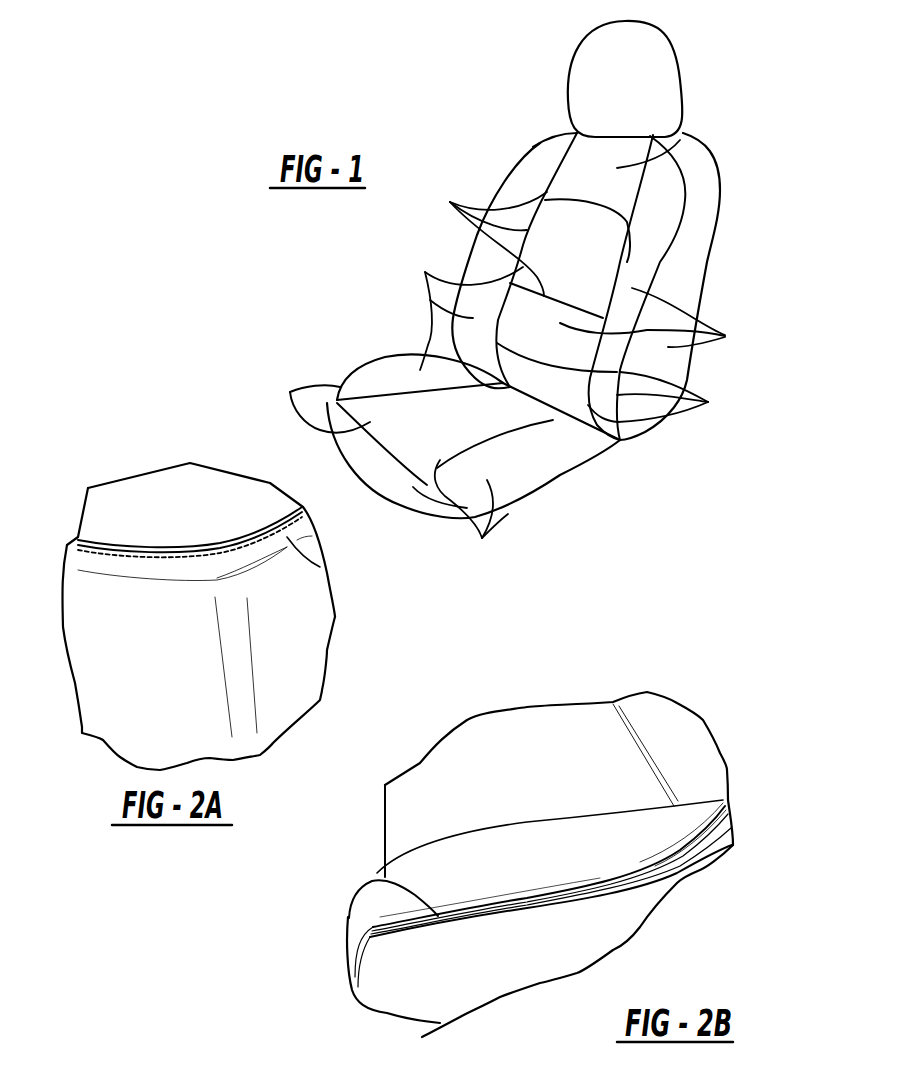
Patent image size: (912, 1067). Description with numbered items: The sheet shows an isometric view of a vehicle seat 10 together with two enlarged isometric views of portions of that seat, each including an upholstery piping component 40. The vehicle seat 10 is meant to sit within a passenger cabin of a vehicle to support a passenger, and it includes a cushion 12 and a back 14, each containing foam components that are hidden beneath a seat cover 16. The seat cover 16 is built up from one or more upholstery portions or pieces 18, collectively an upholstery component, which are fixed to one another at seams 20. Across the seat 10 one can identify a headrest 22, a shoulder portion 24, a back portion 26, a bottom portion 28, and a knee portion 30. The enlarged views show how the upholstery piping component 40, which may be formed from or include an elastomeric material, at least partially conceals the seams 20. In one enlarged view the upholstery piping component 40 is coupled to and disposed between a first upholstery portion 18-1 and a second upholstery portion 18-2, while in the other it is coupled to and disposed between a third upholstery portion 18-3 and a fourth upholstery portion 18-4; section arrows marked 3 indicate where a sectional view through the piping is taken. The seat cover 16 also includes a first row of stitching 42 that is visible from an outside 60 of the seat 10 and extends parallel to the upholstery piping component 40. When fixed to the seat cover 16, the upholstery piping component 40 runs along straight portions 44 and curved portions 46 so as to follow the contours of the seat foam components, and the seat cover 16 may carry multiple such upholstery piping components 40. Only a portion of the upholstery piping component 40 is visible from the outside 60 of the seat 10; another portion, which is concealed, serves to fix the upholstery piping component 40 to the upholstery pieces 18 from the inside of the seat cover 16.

In FIG. 1, the vehicle seat 10 is at (497, 57).
In FIG. 1, the cushion 12 is at (383, 397).
In FIG. 1, the back 14 is at (703, 165).
In FIG. 1, the seat cover 16 is at (520, 185).
In FIG. 2A, the seat cover 16 is at (115, 695).
In FIG. 2B, the seat cover 16 is at (577, 723).
In FIG. 1, the upholstery portions 18 is at (617, 168).
In FIG. 1, the seams 20 is at (587, 527).
In FIG. 1, the headrest 22 is at (653, 50).
In FIG. 1, the shoulder portion 24 is at (543, 147).
In FIG. 1, the back portion 26 is at (660, 212).
In FIG. 1, the bottom portion 28 is at (490, 421).
In FIG. 1, the knee portion 30 is at (381, 469).
In FIG. 1, the outside 60 is at (392, 281).
In FIG. 2A, the first upholstery portion 18-1 is at (158, 487).
In FIG. 2A, the second upholstery portion 18-2 is at (95, 643).
In FIG. 2B, the third upholstery portion 18-3 is at (677, 827).
In FIG. 2B, the fourth upholstery portion 18-4 is at (388, 985).
In FIG. 2A, the upholstery piping component 40 is at (108, 543).
In FIG. 2B, the upholstery piping component 40 is at (370, 880).
In FIG. 2A, the first row of stitching 42 is at (287, 537).
In FIG. 2B, the first row of stitching 42 is at (618, 902).
In FIG. 2B, the straight portions 44 is at (523, 895).
In FIG. 2A, the curved portions 46 is at (202, 547).
In FIG. 2B, the curved portions 46 is at (367, 936).
In FIG. 2A, the section line 3- 3 is at (212, 522).